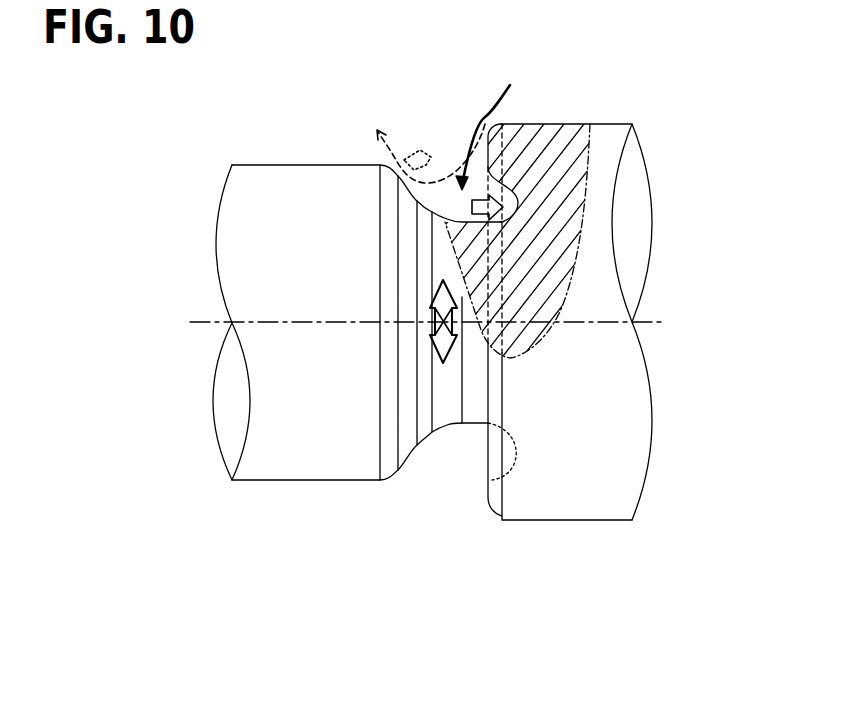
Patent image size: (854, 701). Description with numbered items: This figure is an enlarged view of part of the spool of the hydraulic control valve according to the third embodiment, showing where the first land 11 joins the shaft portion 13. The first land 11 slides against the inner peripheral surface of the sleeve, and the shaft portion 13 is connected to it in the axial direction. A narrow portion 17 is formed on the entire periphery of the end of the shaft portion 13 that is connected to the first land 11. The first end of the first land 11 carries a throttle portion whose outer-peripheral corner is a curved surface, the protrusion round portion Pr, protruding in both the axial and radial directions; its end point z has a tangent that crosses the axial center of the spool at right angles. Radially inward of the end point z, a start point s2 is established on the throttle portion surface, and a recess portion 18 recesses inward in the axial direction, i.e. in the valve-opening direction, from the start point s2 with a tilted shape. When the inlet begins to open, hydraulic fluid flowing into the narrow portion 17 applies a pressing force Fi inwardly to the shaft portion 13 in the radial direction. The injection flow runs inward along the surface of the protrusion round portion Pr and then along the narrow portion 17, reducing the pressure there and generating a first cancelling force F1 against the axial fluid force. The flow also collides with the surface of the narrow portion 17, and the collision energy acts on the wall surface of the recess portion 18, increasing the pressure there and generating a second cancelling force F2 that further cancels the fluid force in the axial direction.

The shaft portion 13 is at (290, 468).
The narrow portion 17 is at (451, 440).
The first land 11 is at (635, 420).
The recess portion 18 is at (517, 212).
The end point of the protrusion round portion z is at (489, 144).
The start point s2 is at (489, 160).
The protrusion round portion Pr is at (485, 517).
The pressing force Fi is at (445, 347).
The first cancelling force F1 is at (431, 153).
The second cancelling force F2 is at (476, 152).